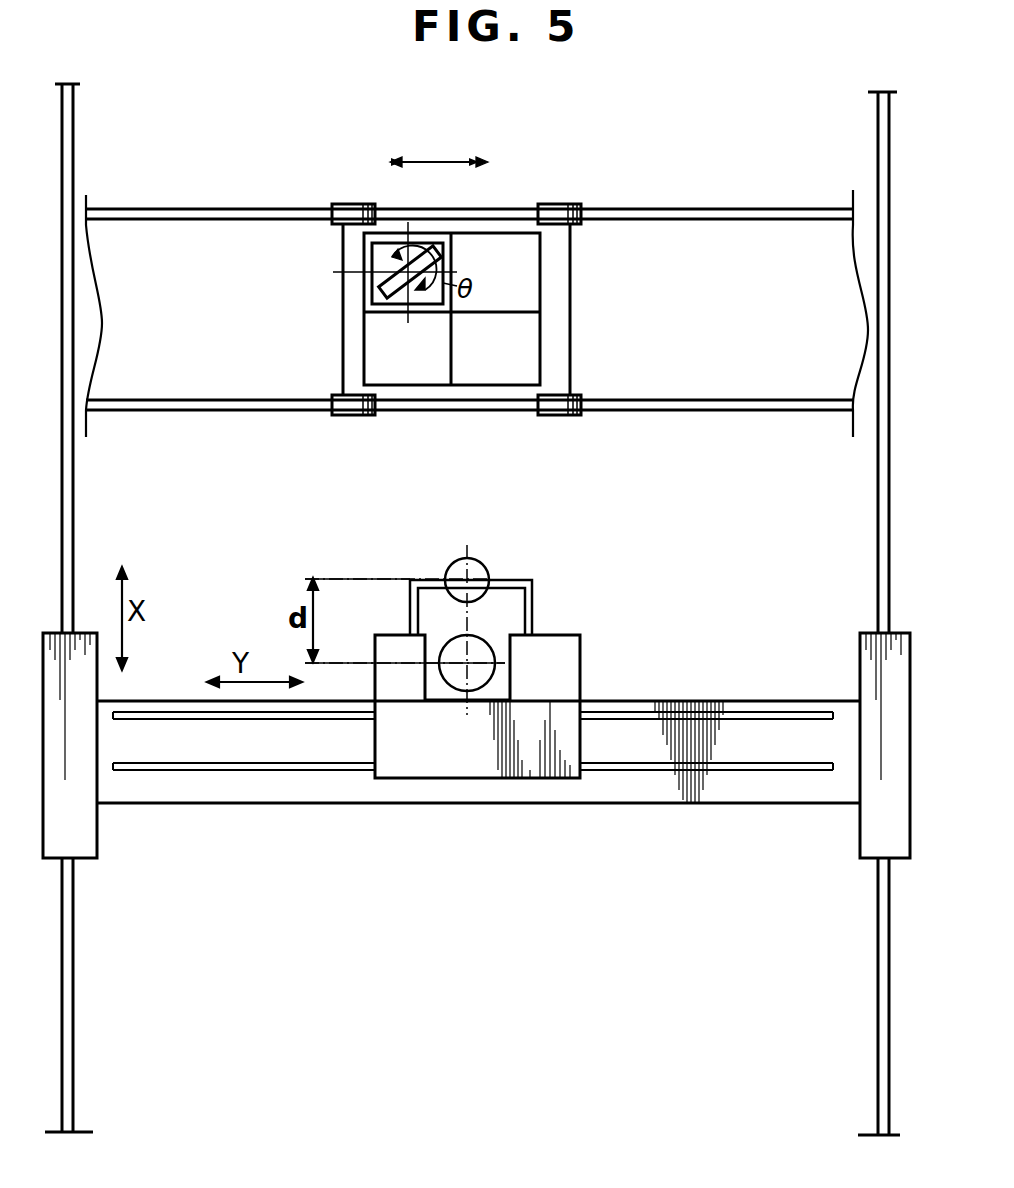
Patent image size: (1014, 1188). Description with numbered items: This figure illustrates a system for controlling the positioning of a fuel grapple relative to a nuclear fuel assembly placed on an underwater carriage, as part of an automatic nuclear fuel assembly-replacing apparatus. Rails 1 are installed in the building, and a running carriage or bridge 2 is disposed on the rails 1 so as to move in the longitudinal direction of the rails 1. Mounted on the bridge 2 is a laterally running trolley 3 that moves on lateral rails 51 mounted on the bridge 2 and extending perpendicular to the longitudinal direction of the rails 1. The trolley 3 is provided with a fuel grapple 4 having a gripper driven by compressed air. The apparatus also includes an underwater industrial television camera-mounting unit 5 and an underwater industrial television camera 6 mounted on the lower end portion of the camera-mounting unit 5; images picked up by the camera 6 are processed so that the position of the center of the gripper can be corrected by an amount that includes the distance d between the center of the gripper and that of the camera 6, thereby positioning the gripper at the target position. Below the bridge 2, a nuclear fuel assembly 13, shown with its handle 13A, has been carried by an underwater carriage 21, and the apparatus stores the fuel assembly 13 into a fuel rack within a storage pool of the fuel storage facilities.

The rails 1 is at (74, 1020).
The bridge 2 is at (285, 803).
The trolley 3 is at (580, 683).
The fuel grapple 4 is at (488, 640).
The camera-mounting unit 5 is at (532, 590).
The ITV camera 6 is at (476, 566).
The nuclear fuel assembly 13 is at (382, 260).
The handle 13A is at (398, 297).
The underwater carriage 21 is at (572, 318).
The lateral rails 51 is at (735, 712).